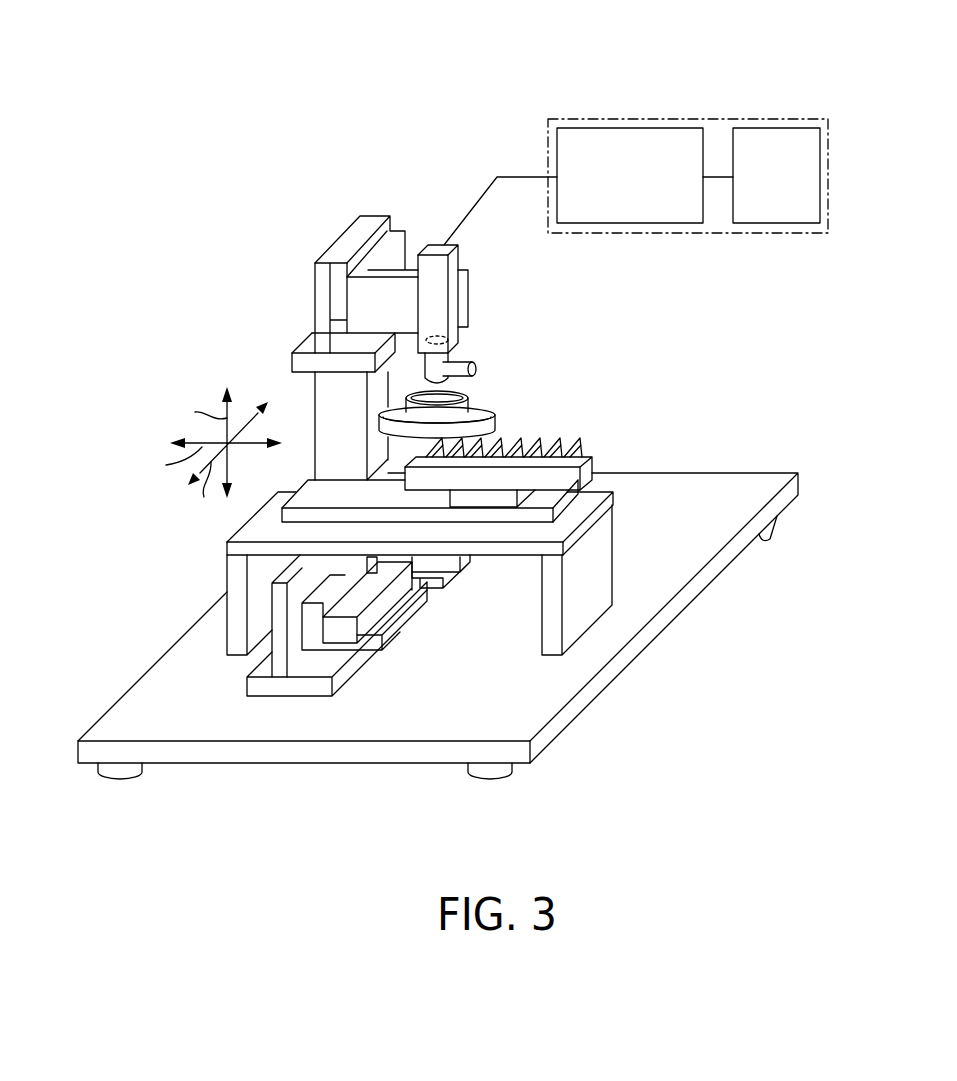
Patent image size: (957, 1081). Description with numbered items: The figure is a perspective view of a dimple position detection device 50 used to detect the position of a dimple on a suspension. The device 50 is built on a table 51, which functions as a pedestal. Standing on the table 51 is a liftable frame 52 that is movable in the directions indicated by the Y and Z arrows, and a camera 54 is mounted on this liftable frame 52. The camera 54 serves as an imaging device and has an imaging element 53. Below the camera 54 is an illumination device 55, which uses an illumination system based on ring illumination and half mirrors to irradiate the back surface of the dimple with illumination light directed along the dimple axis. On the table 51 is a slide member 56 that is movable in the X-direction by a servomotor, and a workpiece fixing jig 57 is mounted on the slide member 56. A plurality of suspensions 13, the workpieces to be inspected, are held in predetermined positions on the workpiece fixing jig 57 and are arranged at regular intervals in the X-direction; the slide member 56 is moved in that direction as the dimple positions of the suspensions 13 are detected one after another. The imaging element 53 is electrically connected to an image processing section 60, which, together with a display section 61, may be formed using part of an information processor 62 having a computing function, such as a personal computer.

The dimple position detection device 50 is at (450, 92).
The table 51 is at (182, 662).
The liftable frame 52 is at (315, 298).
The imaging element 53 is at (448, 338).
The camera 54 is at (457, 259).
The illumination device 55 is at (470, 393).
The slide member 56 is at (535, 500).
The workpiece fixing jig 57 is at (585, 446).
The suspensions 13 is at (558, 440).
The image processing section 60 is at (618, 128).
The display section 61 is at (778, 128).
The information processor 62 is at (722, 119).